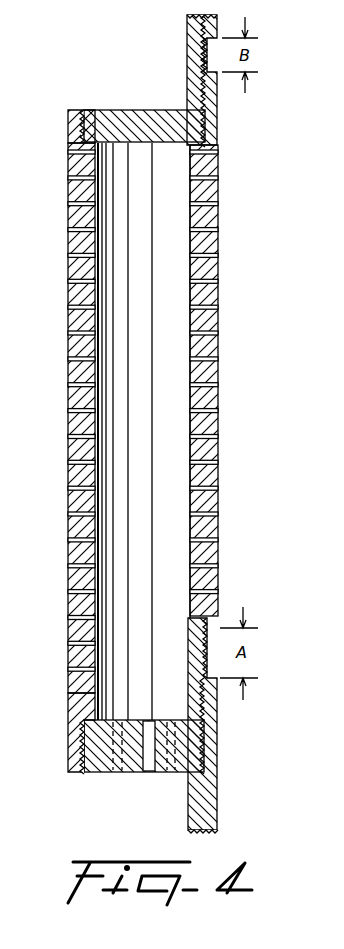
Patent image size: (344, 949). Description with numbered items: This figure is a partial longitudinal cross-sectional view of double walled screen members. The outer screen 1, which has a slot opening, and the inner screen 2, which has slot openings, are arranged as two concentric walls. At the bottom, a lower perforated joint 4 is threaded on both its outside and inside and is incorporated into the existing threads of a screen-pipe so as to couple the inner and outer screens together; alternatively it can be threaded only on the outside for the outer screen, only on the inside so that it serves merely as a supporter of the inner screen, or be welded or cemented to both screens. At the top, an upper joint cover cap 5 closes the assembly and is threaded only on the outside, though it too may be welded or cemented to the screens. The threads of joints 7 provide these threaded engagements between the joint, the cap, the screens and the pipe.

The outer screen 1 is at (198, 448).
The inner screen 2 is at (78, 427).
The lower perforated joint 4 is at (185, 750).
The upper joint cover cap 5 is at (183, 125).
The threads of joints 7 is at (203, 703).